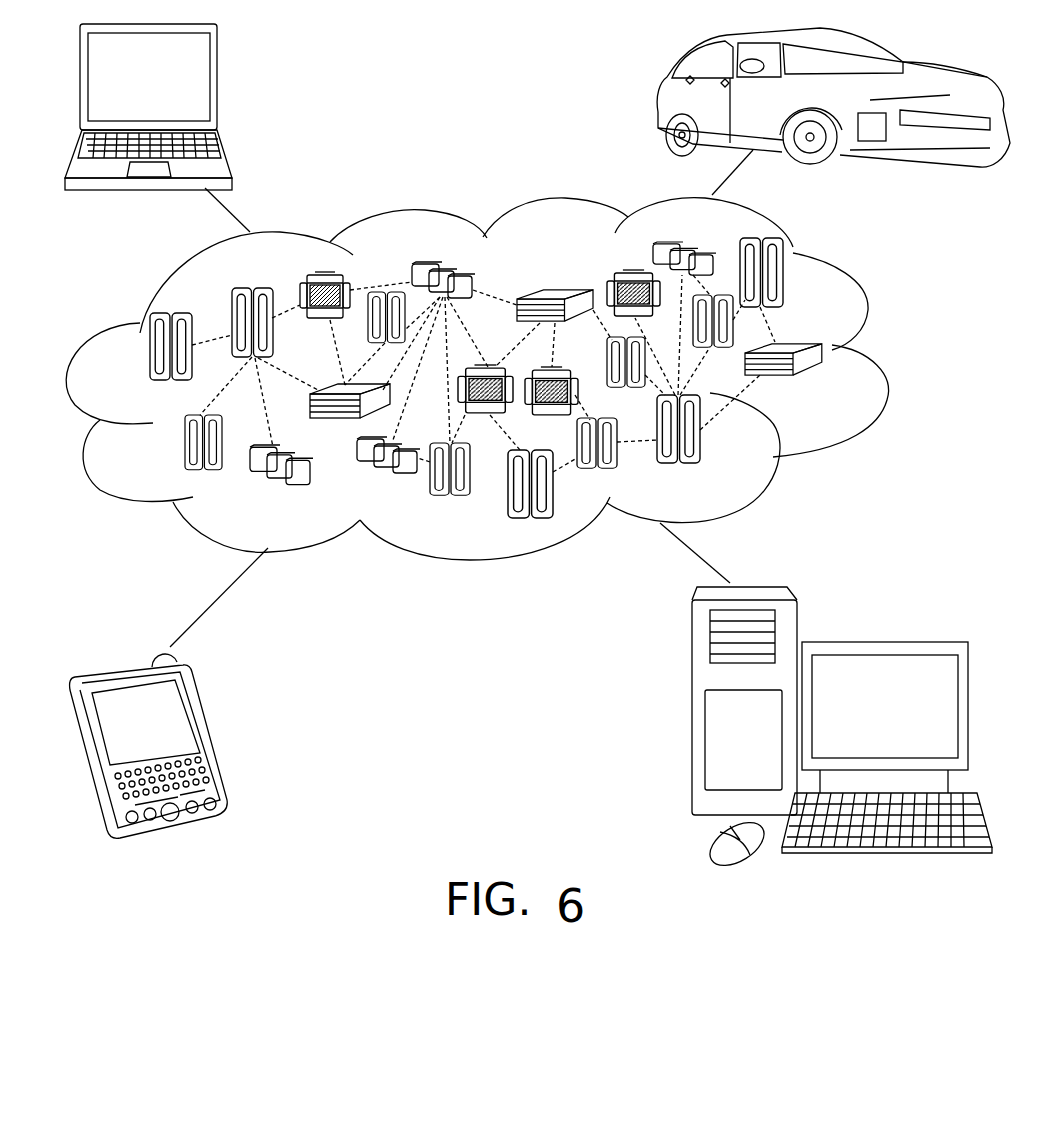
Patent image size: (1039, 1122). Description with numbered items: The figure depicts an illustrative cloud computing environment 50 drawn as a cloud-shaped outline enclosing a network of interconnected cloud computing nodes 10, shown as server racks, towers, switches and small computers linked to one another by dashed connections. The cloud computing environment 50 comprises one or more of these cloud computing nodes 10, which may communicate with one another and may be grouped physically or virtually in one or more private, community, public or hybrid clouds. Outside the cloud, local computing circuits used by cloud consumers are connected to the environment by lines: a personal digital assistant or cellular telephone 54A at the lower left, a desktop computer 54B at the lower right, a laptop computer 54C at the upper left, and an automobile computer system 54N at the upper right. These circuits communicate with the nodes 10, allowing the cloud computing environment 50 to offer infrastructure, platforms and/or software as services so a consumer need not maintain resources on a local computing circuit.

The cloud computing node 10 is at (828, 389).
The cloud computing environment 50 is at (884, 357).
The personal digital assistant or cellular telephone 54A is at (208, 737).
The desktop computer 54B is at (881, 642).
The laptop computer 54C is at (218, 85).
The automobile computer system 54N is at (660, 100).